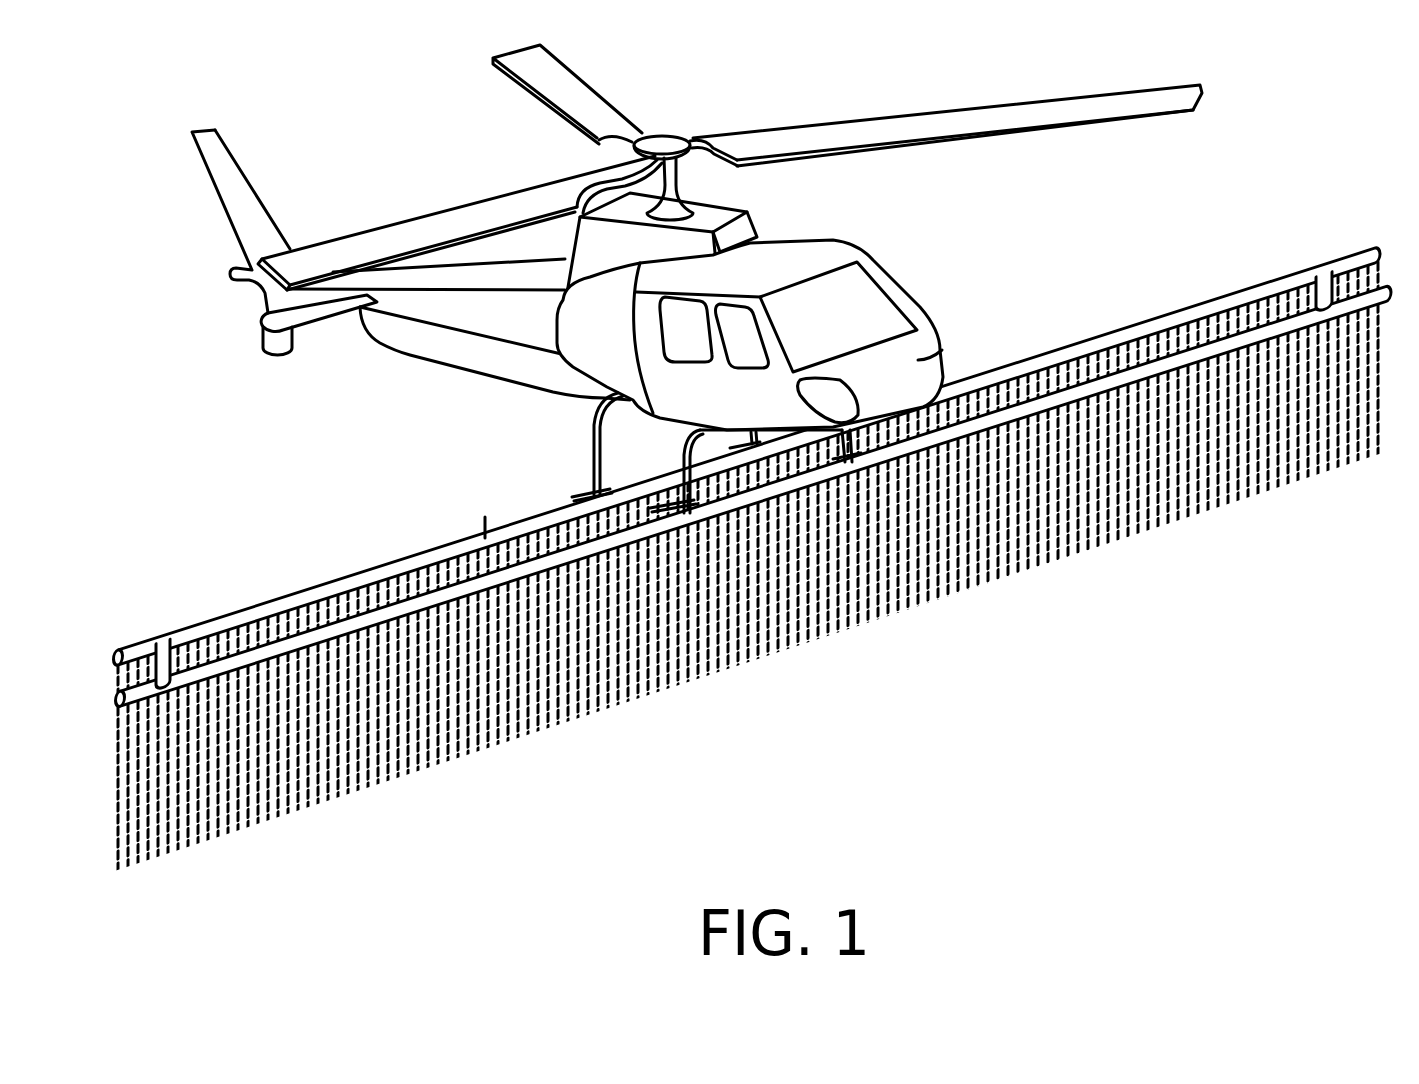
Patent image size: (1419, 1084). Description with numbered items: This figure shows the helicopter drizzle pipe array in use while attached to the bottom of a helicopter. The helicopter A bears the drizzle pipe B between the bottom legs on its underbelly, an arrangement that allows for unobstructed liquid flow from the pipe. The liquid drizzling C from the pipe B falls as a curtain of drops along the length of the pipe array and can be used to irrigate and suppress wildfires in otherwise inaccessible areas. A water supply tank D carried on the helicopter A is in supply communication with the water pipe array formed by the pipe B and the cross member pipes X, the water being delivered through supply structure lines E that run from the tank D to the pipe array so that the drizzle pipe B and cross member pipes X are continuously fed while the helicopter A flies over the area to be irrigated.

The helicopter A is at (920, 356).
The drizzle pipe B is at (1161, 308).
The liquid drizzling C is at (845, 612).
The water supply tank D is at (468, 347).
The supply structure lines E is at (685, 447).
The cross member pipes X is at (1326, 278).